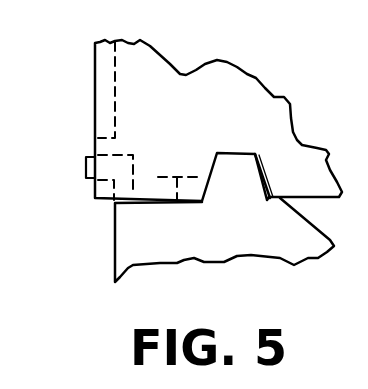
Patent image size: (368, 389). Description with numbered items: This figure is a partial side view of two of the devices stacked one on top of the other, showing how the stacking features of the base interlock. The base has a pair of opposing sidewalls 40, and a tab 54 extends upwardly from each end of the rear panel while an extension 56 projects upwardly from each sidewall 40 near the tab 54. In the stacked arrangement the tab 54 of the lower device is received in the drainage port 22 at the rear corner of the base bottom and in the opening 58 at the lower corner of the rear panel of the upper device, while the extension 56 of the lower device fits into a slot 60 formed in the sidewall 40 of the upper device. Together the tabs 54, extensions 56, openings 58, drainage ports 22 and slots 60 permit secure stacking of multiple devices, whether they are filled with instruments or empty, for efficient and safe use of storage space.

The sidewall 40 is at (232, 93).
The extension 56 is at (240, 177).
The slot 60 is at (254, 195).
The opening 58 is at (103, 145).
The tab 54 is at (86, 166).
The drainage port 22 is at (144, 177).